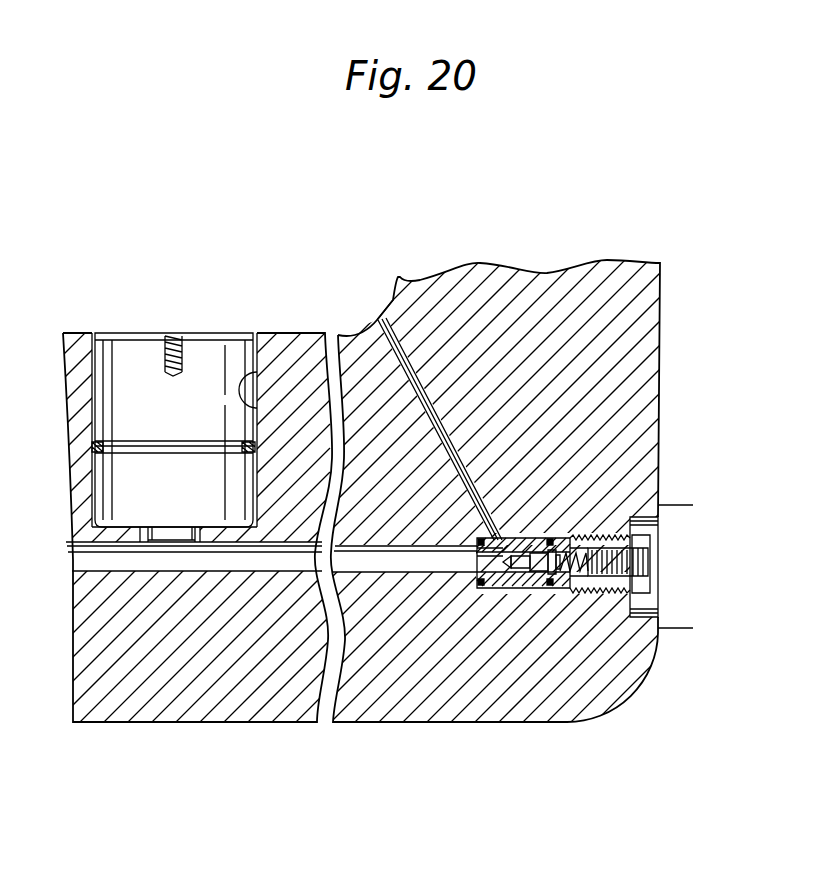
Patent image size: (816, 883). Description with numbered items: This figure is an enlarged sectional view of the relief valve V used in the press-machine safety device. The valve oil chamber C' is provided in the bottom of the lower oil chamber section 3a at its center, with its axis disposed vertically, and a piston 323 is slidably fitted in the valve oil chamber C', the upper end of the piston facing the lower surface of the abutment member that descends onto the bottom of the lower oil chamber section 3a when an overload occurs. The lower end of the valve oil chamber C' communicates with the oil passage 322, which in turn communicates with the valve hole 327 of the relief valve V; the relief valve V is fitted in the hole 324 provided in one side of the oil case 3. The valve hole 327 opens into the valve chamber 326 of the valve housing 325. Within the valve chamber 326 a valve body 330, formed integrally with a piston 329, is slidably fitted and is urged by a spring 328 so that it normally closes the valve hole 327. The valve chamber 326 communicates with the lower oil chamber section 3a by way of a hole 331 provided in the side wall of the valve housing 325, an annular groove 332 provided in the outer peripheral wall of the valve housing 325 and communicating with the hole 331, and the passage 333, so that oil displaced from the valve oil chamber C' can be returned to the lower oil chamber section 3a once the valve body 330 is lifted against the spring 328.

The oil case 3 is at (648, 349).
The lower oil chamber section 3a is at (372, 305).
The oil passage 322 is at (262, 562).
The piston 323 is at (205, 358).
The hole 324 is at (600, 535).
The valve housing 325 is at (477, 553).
The valve chamber 326 is at (527, 578).
The valve hole 327 is at (477, 580).
The spring 328 is at (573, 598).
The piston 329 is at (530, 580).
The valve body 330 is at (512, 583).
The hole 331 is at (515, 580).
The annular groove 332 is at (543, 538).
The passage 333 is at (425, 394).
The valve oil chamber C' is at (269, 348).
The relief valve V is at (497, 585).